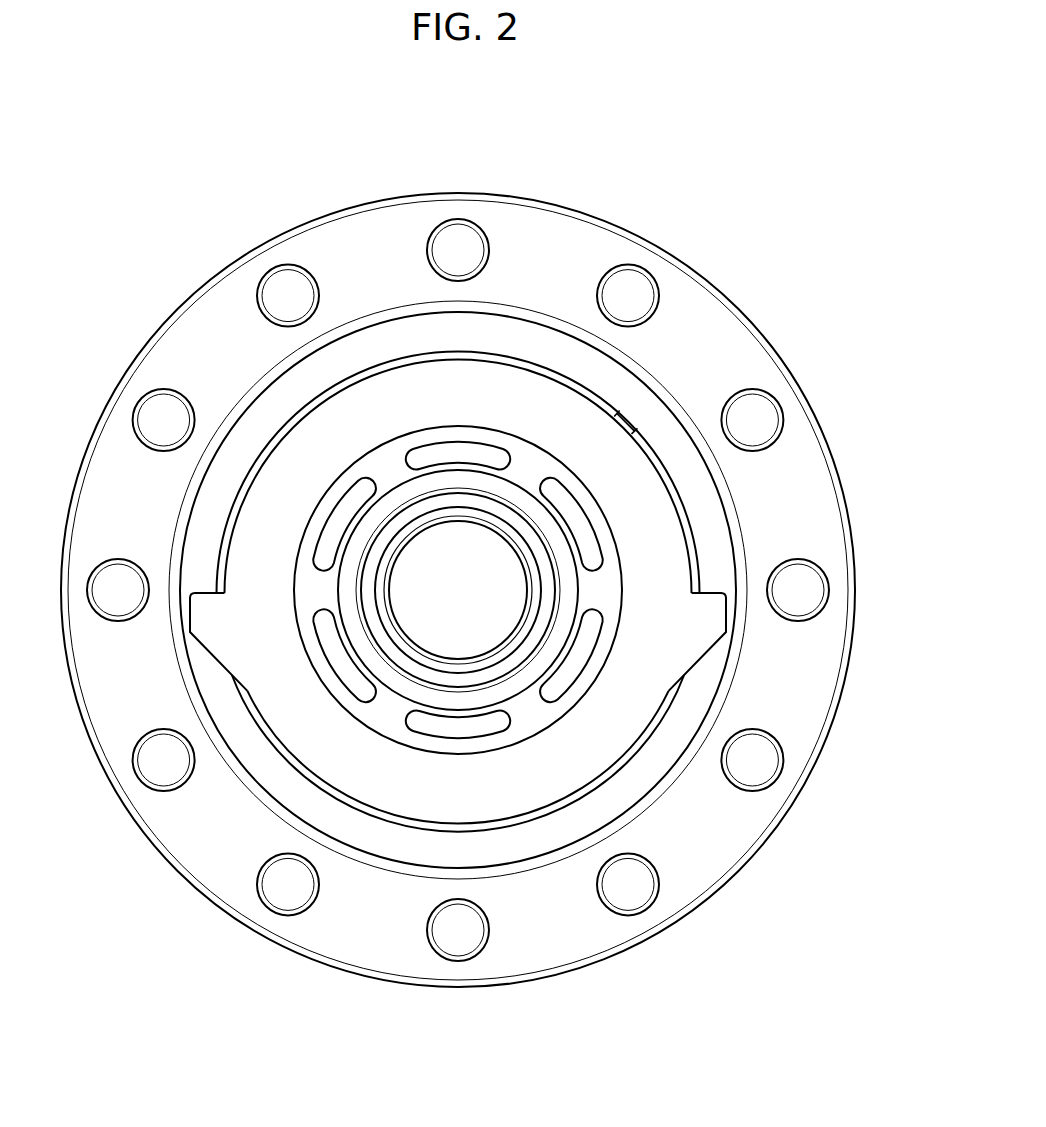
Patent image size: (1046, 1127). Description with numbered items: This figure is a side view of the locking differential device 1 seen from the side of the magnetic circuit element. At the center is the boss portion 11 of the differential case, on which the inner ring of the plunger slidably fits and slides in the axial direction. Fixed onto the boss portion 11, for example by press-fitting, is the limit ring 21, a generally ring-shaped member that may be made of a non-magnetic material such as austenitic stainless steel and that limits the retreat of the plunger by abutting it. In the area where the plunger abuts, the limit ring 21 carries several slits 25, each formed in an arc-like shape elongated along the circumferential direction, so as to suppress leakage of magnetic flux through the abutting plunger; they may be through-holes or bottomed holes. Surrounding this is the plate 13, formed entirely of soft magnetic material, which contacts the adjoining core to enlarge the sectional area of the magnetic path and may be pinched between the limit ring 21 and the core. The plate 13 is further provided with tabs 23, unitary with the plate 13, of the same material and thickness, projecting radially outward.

The locking differential device 1 is at (703, 172).
The boss portion 11 is at (530, 532).
The plate 13 is at (578, 428).
The limit ring 21 is at (590, 502).
The tab 23 is at (205, 620).
The slit 25 is at (596, 545).